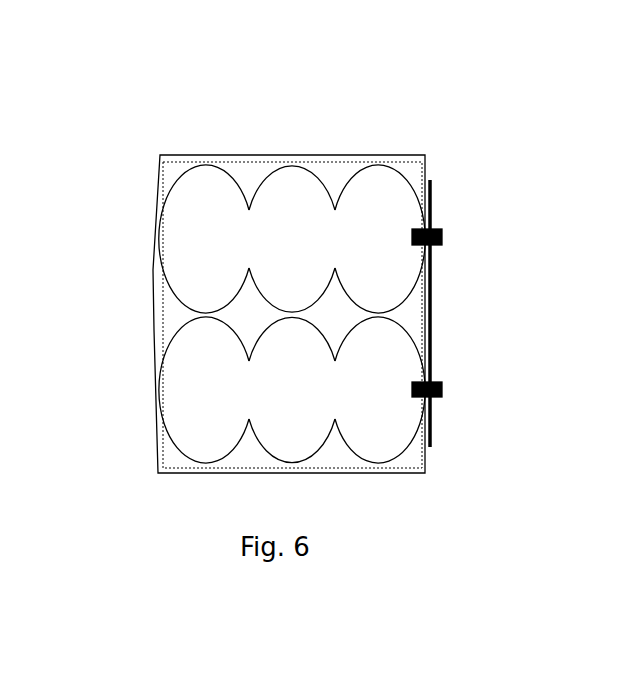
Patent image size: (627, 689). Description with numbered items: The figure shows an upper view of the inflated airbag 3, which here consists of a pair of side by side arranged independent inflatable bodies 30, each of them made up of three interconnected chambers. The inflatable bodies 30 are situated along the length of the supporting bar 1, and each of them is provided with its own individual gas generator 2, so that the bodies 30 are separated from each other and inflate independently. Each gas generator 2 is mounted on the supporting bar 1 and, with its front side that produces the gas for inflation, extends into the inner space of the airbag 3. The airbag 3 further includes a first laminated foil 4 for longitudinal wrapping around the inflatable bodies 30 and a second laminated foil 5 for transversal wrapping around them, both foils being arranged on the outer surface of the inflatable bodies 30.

The airbag 3 is at (233, 142).
The independent inflatable bodies 30 is at (403, 268).
The first laminated foil 4 is at (153, 272).
The second laminated foil 5 is at (340, 155).
The supporting bar 1 is at (430, 190).
The gas generator 2 is at (442, 232).